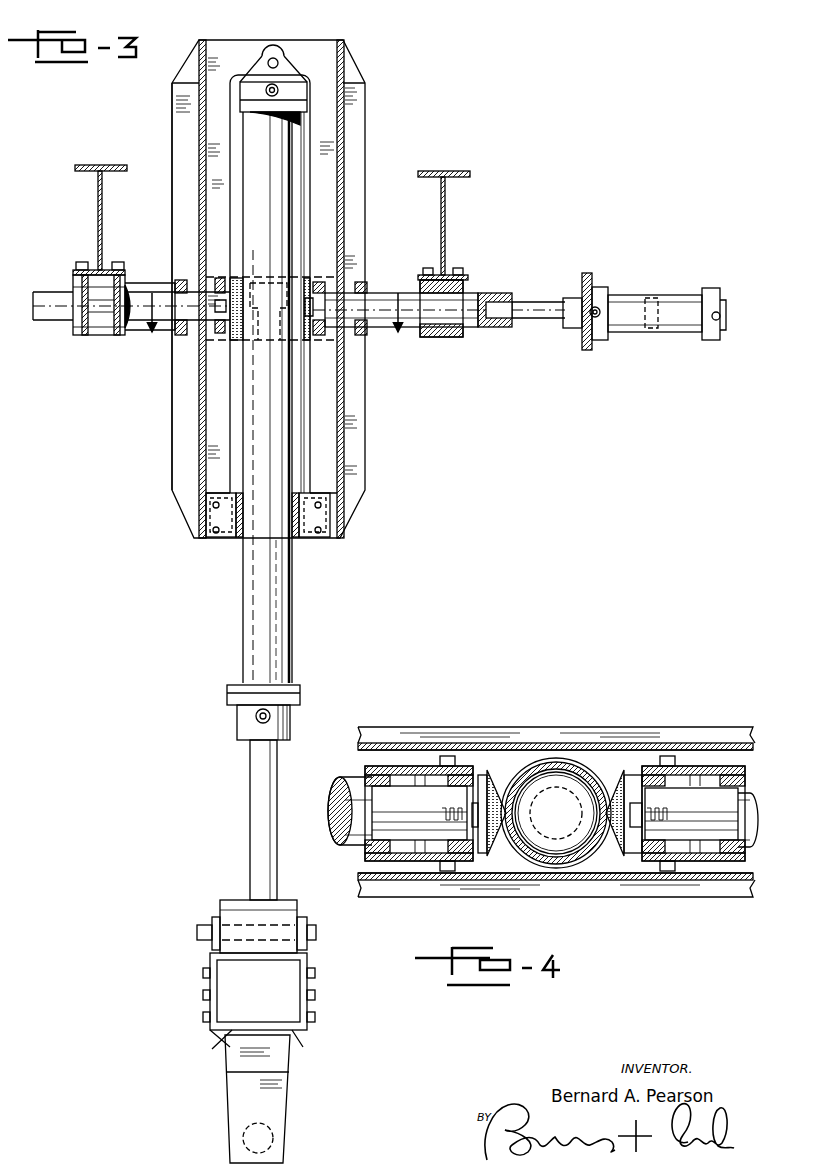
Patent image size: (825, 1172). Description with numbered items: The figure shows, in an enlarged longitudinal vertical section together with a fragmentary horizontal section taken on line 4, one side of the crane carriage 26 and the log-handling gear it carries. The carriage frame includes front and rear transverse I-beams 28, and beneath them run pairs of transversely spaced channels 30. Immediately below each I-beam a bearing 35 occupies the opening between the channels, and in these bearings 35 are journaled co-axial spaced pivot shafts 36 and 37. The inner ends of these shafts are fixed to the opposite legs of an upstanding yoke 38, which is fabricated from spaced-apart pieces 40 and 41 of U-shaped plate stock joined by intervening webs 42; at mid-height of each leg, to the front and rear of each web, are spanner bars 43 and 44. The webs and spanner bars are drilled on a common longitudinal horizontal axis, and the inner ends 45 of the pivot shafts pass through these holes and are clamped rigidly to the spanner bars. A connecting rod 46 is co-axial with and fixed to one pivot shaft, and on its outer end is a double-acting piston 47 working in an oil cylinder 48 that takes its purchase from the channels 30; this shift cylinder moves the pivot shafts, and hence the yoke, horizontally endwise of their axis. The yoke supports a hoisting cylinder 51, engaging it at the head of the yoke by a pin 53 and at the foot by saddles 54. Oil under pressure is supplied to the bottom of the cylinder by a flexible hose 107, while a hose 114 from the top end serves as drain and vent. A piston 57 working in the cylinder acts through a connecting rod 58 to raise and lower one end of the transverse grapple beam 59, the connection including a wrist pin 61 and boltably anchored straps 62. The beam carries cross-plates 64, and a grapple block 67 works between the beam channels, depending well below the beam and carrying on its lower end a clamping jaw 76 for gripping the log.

In FIG. 3, the section line 4— 4 is at (276, 331).
In FIG. 3, the crane carriage 26 is at (481, 180).
In FIG. 3, the transverse I-beam 28 is at (98, 203).
In FIG. 3, the transversely spaced channels 30 is at (500, 292).
In FIG. 4, the transversely spaced channels 30 is at (420, 892).
In FIG. 3, the bearing block 35 is at (98, 336).
In FIG. 3, the pivot shaft 36 is at (53, 322).
In FIG. 4, the pivot shaft 36 is at (340, 793).
In FIG. 3, the pivot shaft 37 is at (495, 329).
In FIG. 4, the pivot shaft 37 is at (750, 803).
In FIG. 3, the upstanding yoke 38 is at (367, 458).
In FIG. 3, the U-shaped plate piece 40 is at (172, 467).
In FIG. 4, the U-shaped plate piece 40 is at (366, 769).
In FIG. 4, the U-shaped plate piece 41 is at (362, 862).
In FIG. 3, the web 42 is at (199, 412).
In FIG. 4, the web 42 is at (421, 775).
In FIG. 3, the spanner bar 43 is at (362, 282).
In FIG. 4, the spanner bar 43 is at (365, 854).
In FIG. 3, the spanner bar 44 is at (322, 285).
In FIG. 4, the spanner bar 44 is at (466, 778).
In FIG. 3, the inner ends of pivot shafts 45 is at (219, 302).
In FIG. 4, the inner ends of pivot shafts 45 is at (402, 790).
In FIG. 3, the connecting rod 46 is at (552, 303).
In FIG. 3, the double-acting piston 47 is at (652, 298).
In FIG. 3, the oil cylinder 48 is at (684, 333).
In FIG. 3, the hoisting cylinder 51 is at (243, 607).
In FIG. 4, the hoisting cylinder 51 is at (556, 855).
In FIG. 3, the pin 53 is at (273, 58).
In FIG. 3, the saddle 54 is at (298, 540).
In FIG. 4, the saddle 54 is at (583, 762).
In FIG. 3, the piston 57 is at (278, 283).
In FIG. 3, the connecting rod 58 is at (250, 807).
In FIG. 4, the connecting rod 58 is at (544, 790).
In FIG. 3, the transverse grapple beam 59 is at (206, 984).
In FIG. 3, the wrist pin 61 is at (316, 933).
In FIG. 3, the strap 62 is at (212, 917).
In FIG. 3, the cross-plate 64 is at (228, 1038).
In FIG. 3, the grapple block 67 is at (282, 1064).
In FIG. 3, the clamping jaw 76 is at (273, 1136).
In FIG. 3, the flexible hose 107 is at (240, 720).
In FIG. 3, the flexible hose 114 is at (283, 88).